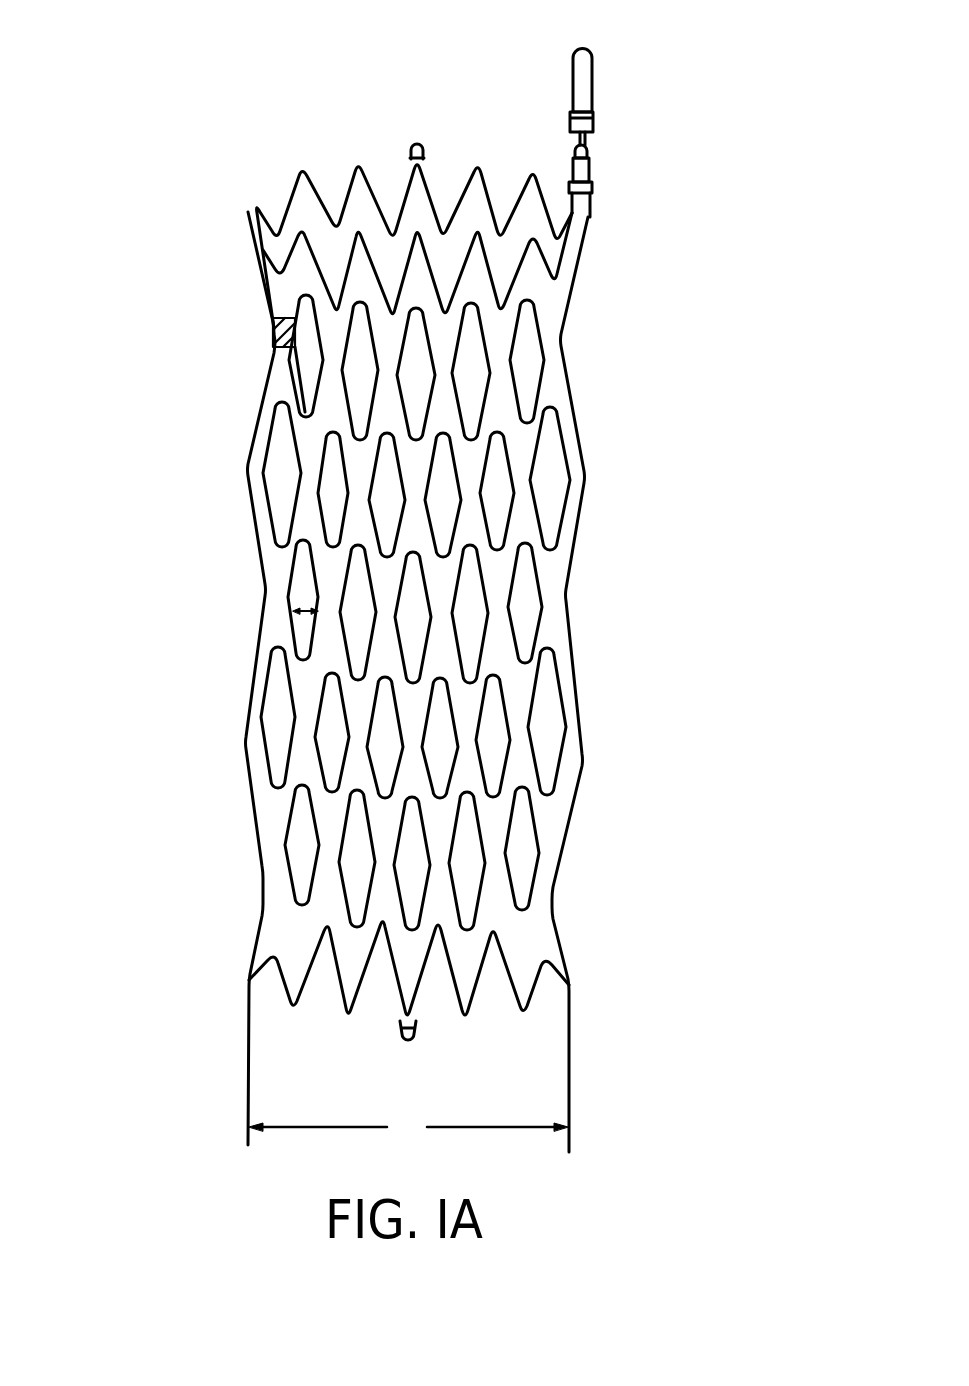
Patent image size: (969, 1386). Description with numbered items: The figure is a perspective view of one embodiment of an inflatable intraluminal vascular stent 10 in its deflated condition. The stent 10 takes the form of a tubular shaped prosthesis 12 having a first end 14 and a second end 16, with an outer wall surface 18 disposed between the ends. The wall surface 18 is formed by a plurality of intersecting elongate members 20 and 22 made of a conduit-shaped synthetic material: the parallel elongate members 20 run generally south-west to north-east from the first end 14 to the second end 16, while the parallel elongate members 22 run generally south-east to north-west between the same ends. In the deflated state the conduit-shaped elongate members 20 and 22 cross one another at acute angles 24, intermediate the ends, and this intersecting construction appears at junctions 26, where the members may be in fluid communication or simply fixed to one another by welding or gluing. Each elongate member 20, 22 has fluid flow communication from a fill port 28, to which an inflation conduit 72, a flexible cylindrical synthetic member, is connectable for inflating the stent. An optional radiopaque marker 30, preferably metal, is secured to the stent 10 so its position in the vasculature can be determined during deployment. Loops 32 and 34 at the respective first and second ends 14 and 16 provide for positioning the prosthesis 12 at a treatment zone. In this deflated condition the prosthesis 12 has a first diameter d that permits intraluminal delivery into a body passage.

The inflatable intraluminal vascular stent 10 is at (670, 223).
The tubular shaped prosthesis 12 is at (552, 570).
The first end 14 is at (487, 1000).
The second end 16 is at (330, 173).
The outer wall surface 18 is at (569, 390).
The elongate members 20 is at (292, 772).
The elongate members 22 is at (253, 757).
The acute angles 24 is at (296, 615).
The junctions 26 is at (270, 812).
The fill port 28 is at (590, 170).
The radiopaque marker 30 is at (275, 327).
The loop 32 is at (410, 1038).
The loop 34 is at (420, 142).
The inflation conduit 72 is at (592, 87).